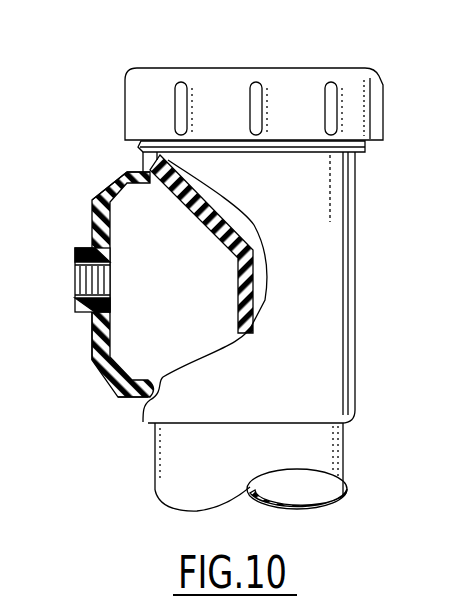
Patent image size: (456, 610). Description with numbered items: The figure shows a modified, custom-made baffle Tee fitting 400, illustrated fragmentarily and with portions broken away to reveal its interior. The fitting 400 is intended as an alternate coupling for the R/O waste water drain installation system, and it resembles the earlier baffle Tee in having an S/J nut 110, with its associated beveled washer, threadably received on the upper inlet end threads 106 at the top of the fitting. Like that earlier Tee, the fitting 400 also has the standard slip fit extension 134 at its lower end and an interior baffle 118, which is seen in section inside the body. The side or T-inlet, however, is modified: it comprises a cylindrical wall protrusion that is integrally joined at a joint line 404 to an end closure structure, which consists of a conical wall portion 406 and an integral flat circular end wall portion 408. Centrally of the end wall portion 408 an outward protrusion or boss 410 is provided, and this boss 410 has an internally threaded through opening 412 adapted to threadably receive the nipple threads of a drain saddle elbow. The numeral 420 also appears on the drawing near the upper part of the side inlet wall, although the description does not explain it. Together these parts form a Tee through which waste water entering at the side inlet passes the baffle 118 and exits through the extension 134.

The S/J nut 110 is at (389, 86).
The upper inlet end threads 106 is at (363, 143).
The baffle Tee fitting 400 is at (358, 202).
The conical wall portion 406 is at (105, 193).
The flat circular end wall portion 408 is at (95, 328).
The top wall portion 420 is at (125, 168).
The joint line 404 is at (108, 170).
The boss 410 is at (80, 250).
The internally threaded through opening 412 is at (80, 277).
The interior baffle 118 is at (227, 222).
The slip fit extension 134 is at (163, 450).